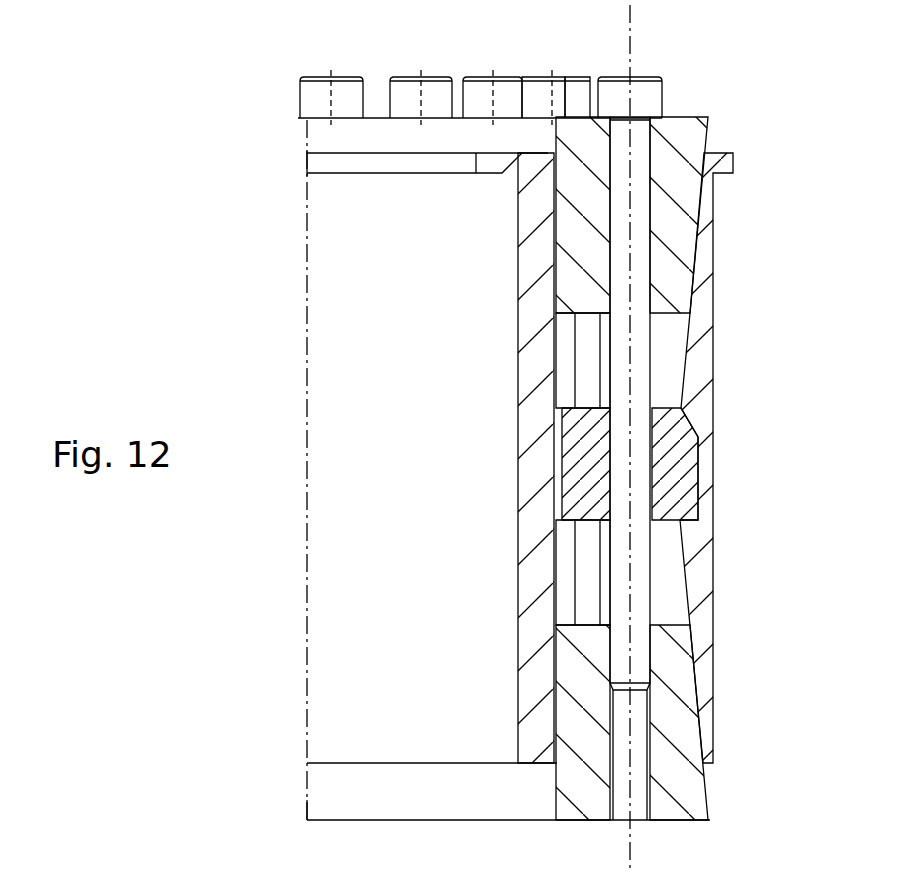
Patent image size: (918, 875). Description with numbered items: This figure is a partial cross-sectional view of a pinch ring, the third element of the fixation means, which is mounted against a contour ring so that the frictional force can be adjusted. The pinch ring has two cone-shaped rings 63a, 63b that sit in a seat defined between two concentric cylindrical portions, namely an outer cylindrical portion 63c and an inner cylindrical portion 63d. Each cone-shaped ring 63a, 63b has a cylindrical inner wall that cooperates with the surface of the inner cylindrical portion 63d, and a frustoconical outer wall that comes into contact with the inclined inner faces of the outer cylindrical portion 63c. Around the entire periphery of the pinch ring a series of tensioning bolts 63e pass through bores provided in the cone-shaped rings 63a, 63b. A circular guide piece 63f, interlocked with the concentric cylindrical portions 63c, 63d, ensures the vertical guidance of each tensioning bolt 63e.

The cone-shaped ring 63a is at (698, 133).
The cone-shaped ring 63b is at (677, 728).
The outer cylindrical portion 63c is at (703, 293).
The inner cylindrical portion 63d is at (520, 290).
The tensioning bolt 63e is at (641, 96).
The circular guide piece 63f is at (690, 458).